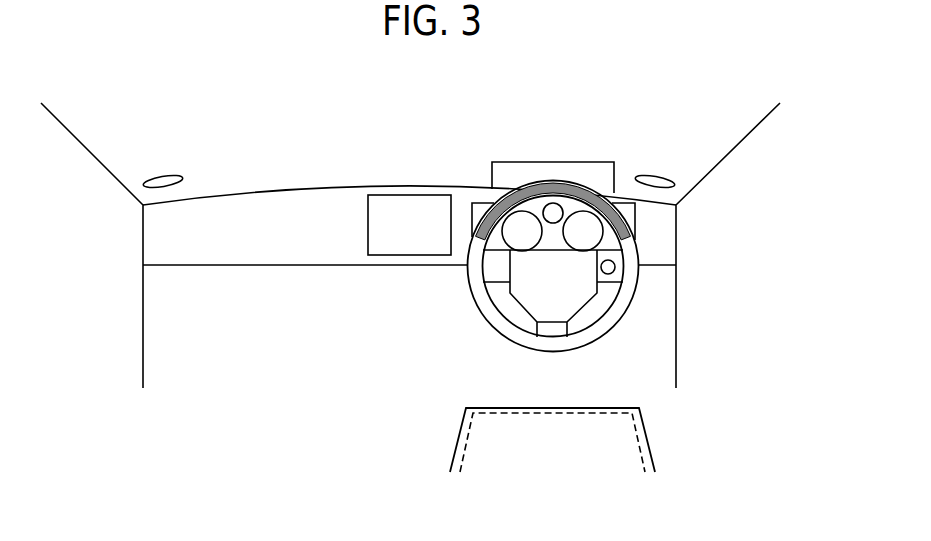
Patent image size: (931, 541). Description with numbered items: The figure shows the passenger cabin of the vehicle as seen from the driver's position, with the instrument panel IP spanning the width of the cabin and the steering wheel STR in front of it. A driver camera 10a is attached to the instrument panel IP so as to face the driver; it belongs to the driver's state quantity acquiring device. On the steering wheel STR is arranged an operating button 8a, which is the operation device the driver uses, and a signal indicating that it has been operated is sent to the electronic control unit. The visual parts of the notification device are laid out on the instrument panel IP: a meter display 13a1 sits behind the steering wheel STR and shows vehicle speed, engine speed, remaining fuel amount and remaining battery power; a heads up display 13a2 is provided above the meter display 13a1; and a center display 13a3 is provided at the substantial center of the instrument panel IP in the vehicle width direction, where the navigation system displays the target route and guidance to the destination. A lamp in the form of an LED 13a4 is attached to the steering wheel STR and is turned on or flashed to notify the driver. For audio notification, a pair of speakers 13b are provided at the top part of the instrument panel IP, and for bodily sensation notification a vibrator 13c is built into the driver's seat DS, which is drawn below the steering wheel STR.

The instrument panel IP is at (265, 205).
The pair of speakers 13b is at (164, 176).
The center display 13a3 is at (388, 205).
The heads up display 13a2 is at (512, 162).
The meter display 13a1 is at (632, 211).
The LED 13a4 is at (493, 217).
The driver camera 10a is at (553, 203).
The operating button 8a is at (615, 265).
The steering wheel STR is at (484, 318).
The driver's seat DS is at (645, 428).
The vibrator 13c is at (460, 429).